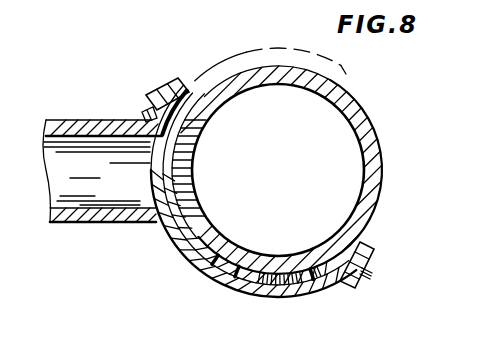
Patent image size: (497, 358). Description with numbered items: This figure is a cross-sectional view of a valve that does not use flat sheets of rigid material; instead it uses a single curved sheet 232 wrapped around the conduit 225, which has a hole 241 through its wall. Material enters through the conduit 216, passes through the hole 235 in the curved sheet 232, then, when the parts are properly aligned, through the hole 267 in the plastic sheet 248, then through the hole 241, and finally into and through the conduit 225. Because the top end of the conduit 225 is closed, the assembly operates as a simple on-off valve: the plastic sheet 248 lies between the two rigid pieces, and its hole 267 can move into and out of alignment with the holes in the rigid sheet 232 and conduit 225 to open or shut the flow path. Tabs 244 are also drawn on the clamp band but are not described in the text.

The conduit 225 is at (345, 154).
The hole 241 is at (185, 179).
The curved sheet 232 is at (180, 243).
The plastic sheet 248 is at (222, 262).
The hole 267 is at (282, 280).
The clamp tabs 244 is at (148, 98).
The conduit 216 is at (63, 223).
The hole 235 is at (147, 177).